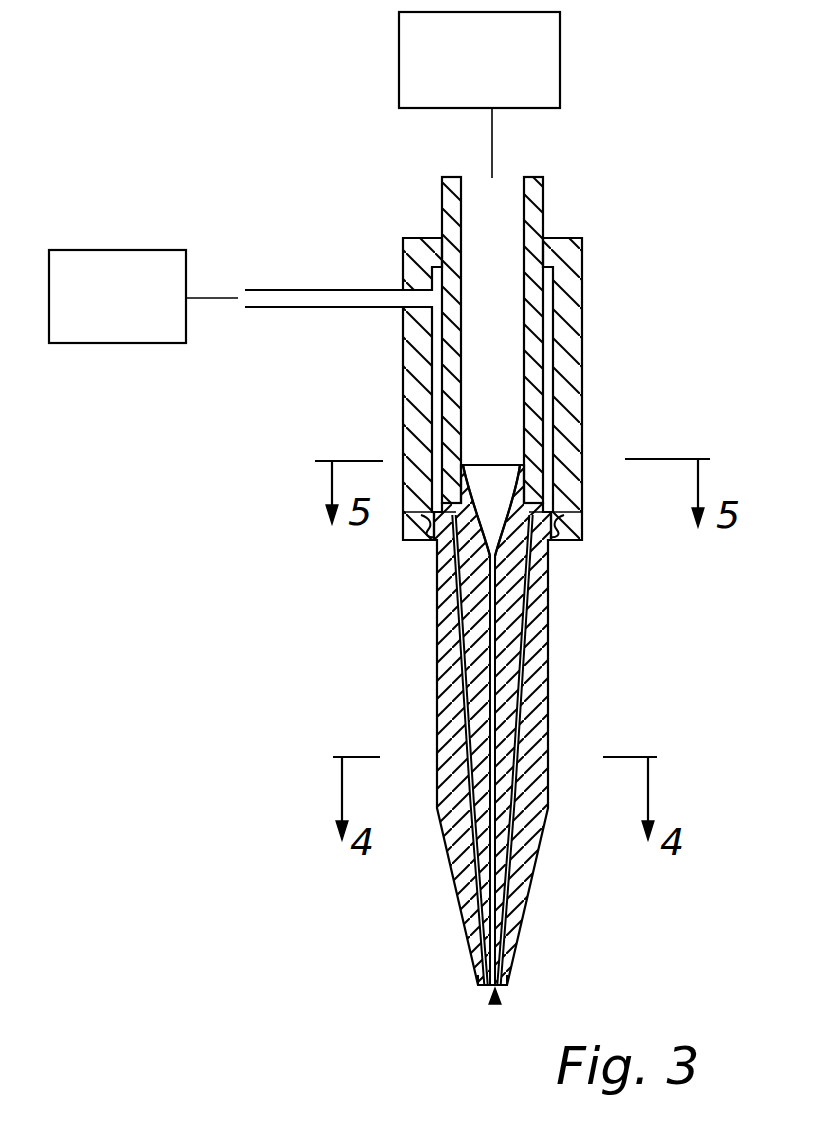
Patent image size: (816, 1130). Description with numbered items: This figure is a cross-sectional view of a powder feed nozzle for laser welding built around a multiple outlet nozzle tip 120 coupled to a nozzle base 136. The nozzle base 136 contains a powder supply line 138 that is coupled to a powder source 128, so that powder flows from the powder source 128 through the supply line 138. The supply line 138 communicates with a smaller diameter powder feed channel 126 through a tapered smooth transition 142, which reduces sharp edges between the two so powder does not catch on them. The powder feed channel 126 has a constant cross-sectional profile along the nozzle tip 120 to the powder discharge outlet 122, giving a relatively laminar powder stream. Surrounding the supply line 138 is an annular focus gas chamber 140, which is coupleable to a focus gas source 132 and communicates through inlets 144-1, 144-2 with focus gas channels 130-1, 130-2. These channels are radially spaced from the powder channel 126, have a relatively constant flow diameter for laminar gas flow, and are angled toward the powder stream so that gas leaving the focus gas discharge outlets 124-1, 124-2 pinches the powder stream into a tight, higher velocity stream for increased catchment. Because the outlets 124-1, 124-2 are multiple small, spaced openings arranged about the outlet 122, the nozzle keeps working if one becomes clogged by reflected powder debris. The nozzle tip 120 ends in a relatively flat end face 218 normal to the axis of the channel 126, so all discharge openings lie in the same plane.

The nozzle tip 120 is at (580, 656).
The powder discharge outlet 122 is at (488, 995).
The focus gas discharge outlet 124-1 is at (481, 984).
The focus gas discharge outlet 124-2 is at (504, 985).
The powder feed channel 126 is at (500, 604).
The powder source 128 is at (560, 73).
The focus gas channel 130-1 is at (455, 620).
The focus gas channel 130-2 is at (530, 706).
The focus gas source 132 is at (130, 251).
The nozzle base 136 is at (582, 395).
The powder supply line 138 is at (507, 271).
The annular focus gas chamber 140 is at (437, 372).
The tapered smooth transition 142 is at (489, 502).
The inlet 144-1 is at (432, 516).
The inlet 144-2 is at (542, 514).
The flat end face 218 is at (500, 1003).